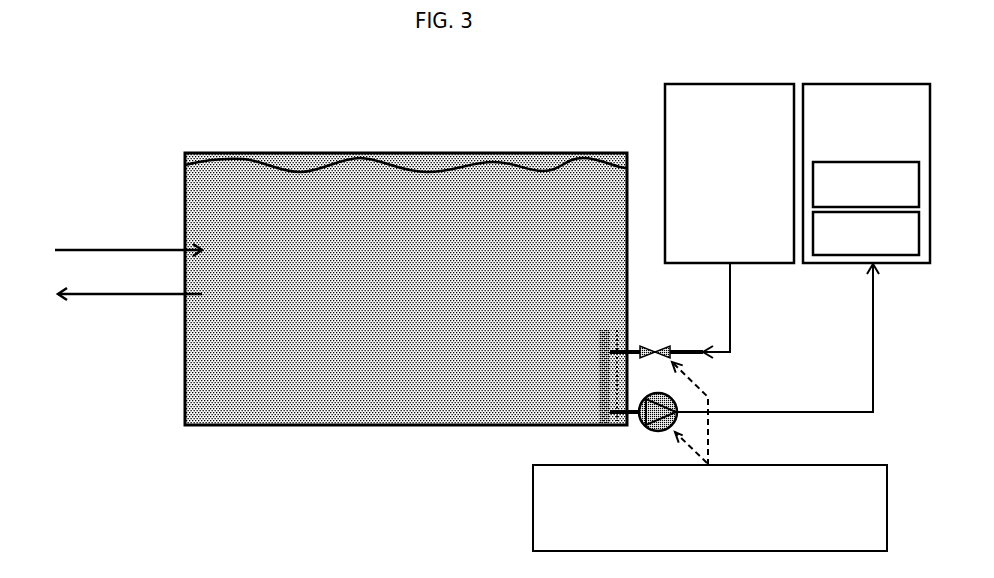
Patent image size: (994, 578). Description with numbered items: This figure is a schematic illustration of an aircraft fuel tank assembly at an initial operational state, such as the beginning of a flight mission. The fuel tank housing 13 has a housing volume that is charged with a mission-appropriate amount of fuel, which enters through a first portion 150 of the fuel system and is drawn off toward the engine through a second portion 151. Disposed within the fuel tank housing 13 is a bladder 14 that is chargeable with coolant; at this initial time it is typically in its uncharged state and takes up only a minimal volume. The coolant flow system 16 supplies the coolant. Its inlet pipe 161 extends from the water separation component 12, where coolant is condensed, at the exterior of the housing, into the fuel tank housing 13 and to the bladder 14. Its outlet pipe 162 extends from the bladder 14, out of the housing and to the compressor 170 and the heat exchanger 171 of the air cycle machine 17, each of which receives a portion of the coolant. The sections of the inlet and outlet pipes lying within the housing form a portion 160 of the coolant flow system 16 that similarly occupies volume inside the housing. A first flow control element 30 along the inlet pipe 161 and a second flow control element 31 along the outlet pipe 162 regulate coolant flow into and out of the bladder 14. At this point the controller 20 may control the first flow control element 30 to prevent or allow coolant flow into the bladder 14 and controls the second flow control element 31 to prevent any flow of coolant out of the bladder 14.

The water separation component 12 is at (719, 209).
The fuel tank housing 13 is at (258, 155).
The bladder 14 is at (603, 352).
The coolant flow system 16 is at (777, 341).
The air cycle machine (ACM) 17 is at (856, 156).
The controller 20 is at (697, 534).
The first flow control element 30 is at (642, 345).
The second flow control element 31 is at (657, 431).
The first portion 150 is at (88, 250).
The second portion 151 is at (95, 294).
The portion 160 is at (617, 330).
The inlet pipe 161 is at (730, 287).
The outlet pipe 162 is at (873, 336).
The compressor 170 is at (850, 189).
The heat exchanger 171 is at (850, 241).